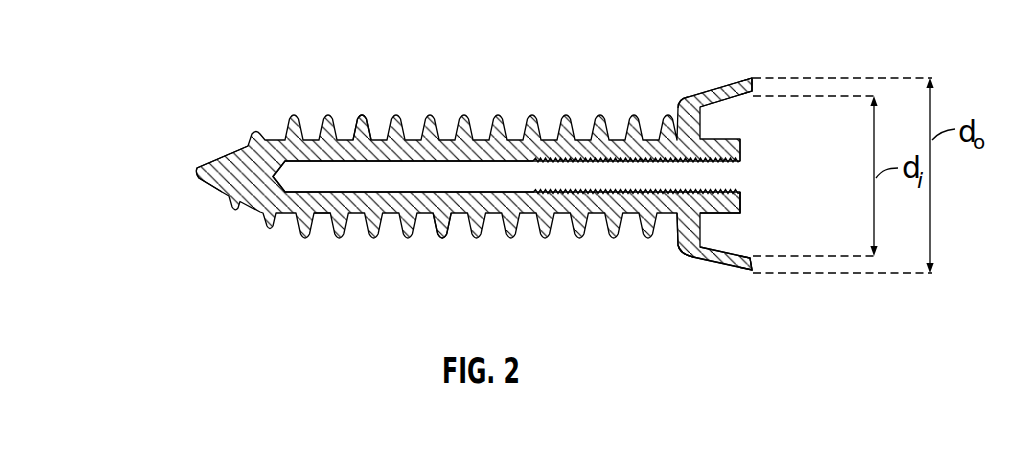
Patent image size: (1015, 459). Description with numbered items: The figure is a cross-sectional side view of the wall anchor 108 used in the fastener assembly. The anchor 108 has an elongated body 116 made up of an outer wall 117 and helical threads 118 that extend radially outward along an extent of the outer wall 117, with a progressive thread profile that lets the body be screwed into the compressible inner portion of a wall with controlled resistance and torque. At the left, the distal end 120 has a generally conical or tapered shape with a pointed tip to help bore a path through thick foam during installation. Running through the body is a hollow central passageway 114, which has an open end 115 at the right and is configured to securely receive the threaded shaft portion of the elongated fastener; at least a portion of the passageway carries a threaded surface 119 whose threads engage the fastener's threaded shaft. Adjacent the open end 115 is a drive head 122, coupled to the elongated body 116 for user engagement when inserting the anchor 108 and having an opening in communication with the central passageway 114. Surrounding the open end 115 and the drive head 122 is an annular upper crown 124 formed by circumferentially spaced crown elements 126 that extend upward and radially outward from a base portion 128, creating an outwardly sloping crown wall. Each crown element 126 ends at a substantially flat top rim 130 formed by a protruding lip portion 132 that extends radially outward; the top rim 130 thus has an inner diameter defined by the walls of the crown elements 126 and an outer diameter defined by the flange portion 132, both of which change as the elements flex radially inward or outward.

The anchor 108 is at (549, 94).
The central passageway 114 is at (415, 178).
The open end 115 is at (727, 172).
The elongated body 116 is at (424, 249).
The outer wall 117 is at (328, 204).
The helical threads 118 is at (362, 116).
The threaded surface 119 is at (563, 207).
The distal end 120 is at (195, 174).
The drive head 122 is at (744, 206).
The upper crown 124 is at (710, 72).
The crown elements 126 is at (721, 259).
The base portion 128 is at (692, 263).
The top rim 130 is at (758, 90).
The protruding lip portion 132 is at (760, 282).